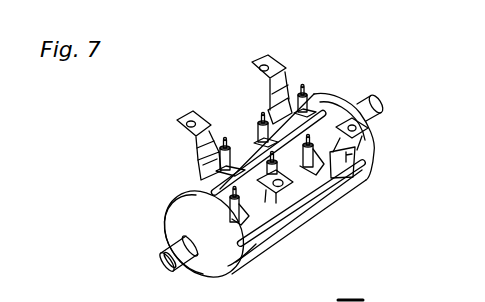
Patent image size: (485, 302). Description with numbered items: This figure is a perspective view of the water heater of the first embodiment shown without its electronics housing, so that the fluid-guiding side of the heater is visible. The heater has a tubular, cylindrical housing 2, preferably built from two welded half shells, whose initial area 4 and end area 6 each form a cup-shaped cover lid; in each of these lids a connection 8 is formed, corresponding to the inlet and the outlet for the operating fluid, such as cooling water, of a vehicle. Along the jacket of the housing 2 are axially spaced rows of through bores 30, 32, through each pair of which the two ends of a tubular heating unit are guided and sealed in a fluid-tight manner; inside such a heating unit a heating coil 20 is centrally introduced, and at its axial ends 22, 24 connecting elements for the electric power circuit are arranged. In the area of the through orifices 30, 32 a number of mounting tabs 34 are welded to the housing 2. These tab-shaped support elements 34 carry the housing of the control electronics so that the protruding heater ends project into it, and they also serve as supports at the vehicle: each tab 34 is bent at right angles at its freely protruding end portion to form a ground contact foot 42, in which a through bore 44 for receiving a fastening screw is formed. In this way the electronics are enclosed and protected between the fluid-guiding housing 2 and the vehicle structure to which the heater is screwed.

The housing 2 is at (338, 71).
The initial area 4 is at (202, 275).
The end area 6 is at (377, 149).
The connection 8 is at (160, 275).
The heating coil 20 is at (261, 118).
The axial end of heating coil 22 is at (193, 157).
The axial end of heating coil 24 is at (220, 197).
The through bore 30 is at (231, 157).
The through bore 32 is at (230, 272).
The mounting tab 34 is at (193, 145).
The ground contact foot 42 is at (187, 114).
The through bore 44 is at (180, 121).